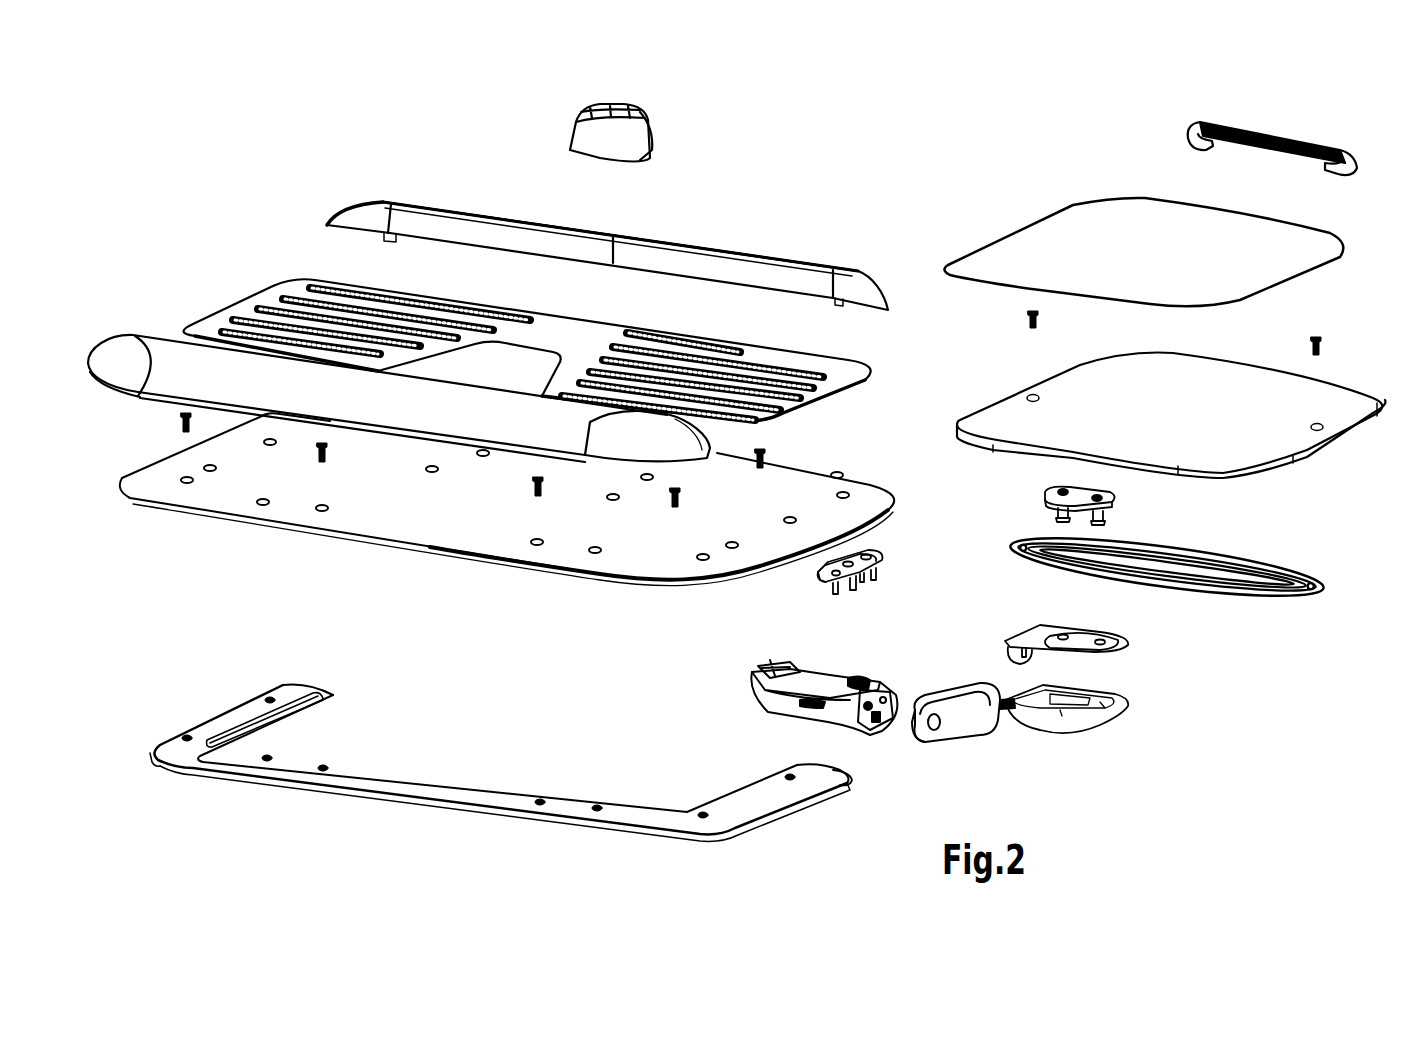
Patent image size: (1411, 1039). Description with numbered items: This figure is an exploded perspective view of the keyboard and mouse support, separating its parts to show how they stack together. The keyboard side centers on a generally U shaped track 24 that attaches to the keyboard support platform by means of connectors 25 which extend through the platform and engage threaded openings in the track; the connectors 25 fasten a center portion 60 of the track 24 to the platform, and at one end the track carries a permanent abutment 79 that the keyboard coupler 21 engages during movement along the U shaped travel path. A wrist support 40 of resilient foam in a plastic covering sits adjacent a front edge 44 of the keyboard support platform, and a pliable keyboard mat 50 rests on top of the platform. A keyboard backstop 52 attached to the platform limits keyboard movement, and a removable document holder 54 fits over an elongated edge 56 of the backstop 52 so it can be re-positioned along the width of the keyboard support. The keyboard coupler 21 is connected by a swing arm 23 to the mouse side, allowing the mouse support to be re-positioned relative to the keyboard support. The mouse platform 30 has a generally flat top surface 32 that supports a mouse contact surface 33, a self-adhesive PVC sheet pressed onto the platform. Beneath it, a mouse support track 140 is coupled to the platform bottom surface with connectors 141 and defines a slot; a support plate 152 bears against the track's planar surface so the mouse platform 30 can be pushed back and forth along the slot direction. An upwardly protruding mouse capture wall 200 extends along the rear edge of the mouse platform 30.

The keyboard coupler 21 is at (813, 715).
The swing arm 23 is at (953, 718).
The U shaped track 24 is at (506, 755).
The connectors 25 is at (180, 424).
The mouse platform 30 is at (1342, 437).
The top surface 32 is at (1171, 392).
The mouse contact surface 33 is at (1068, 233).
The wrist support 40 is at (237, 373).
The front edge 44 is at (360, 543).
The keyboard mat 50 is at (850, 365).
The keyboard backstop 52 is at (705, 270).
The document holder 54 is at (630, 103).
The elongated edge 56 is at (470, 206).
The center portion 60 is at (222, 718).
The permanent abutment 79 is at (840, 786).
The mouse support track 140 is at (1157, 548).
The connectors 141 is at (1027, 325).
The support plate 152 is at (1083, 490).
The mouse capture wall 200 is at (1263, 132).